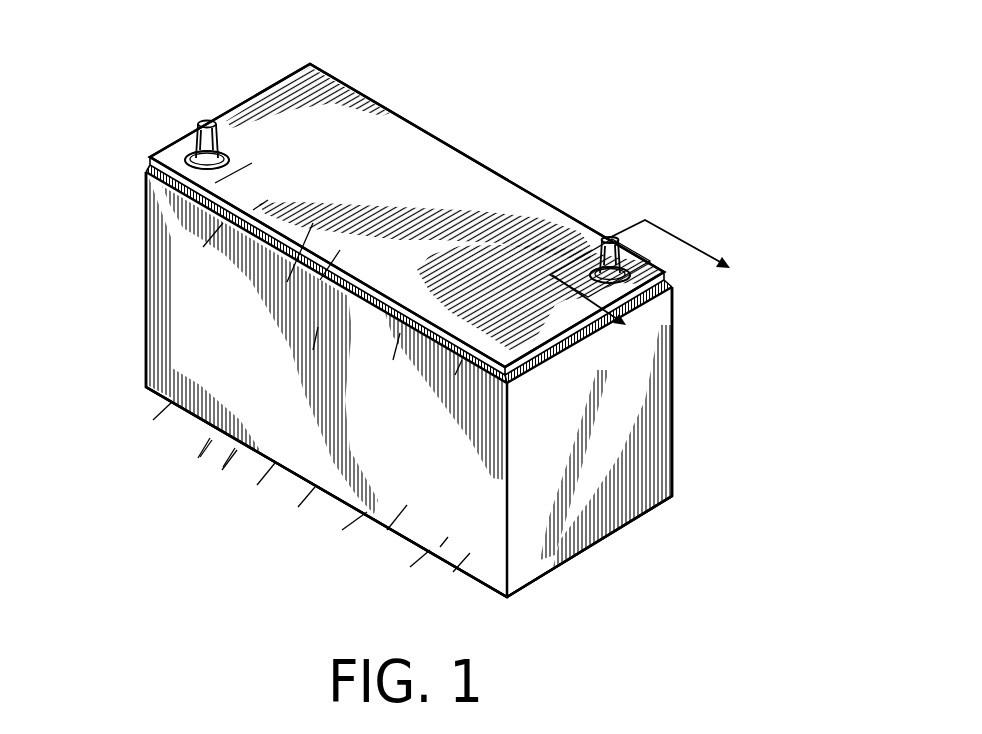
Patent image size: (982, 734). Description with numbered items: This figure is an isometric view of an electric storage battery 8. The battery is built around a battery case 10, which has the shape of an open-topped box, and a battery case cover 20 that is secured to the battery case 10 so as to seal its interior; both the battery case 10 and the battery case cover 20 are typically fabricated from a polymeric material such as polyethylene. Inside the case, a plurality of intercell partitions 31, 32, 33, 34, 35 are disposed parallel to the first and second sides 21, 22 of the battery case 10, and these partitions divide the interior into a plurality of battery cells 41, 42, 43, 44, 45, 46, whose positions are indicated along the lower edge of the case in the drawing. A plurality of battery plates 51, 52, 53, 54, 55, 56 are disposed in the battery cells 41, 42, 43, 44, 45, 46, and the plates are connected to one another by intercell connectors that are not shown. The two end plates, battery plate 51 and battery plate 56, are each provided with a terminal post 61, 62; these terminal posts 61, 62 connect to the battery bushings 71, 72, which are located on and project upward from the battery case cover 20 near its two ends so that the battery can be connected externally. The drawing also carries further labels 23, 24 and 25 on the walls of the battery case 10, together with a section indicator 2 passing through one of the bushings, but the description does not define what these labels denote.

The electric storage battery 8 is at (550, 49).
The battery case 10 is at (672, 328).
The battery case cover 20 is at (457, 168).
The first side 21 is at (656, 448).
The second side 22 is at (145, 187).
The side wall 23 is at (158, 295).
The end wall 24 is at (672, 393).
The bottom wall 25 is at (483, 585).
The section line 2- 2 is at (651, 284).
The intercell partition 31 is at (145, 428).
The intercell partition 32 is at (192, 467).
The intercell partition 33 is at (253, 500).
The intercell partition 34 is at (333, 540).
The intercell partition 35 is at (405, 572).
The battery cell 41 is at (130, 392).
The battery cell 42 is at (177, 437).
The battery cell 43 is at (222, 487).
The battery cell 44 is at (292, 525).
The battery cell 45 is at (370, 555).
The battery cell 46 is at (448, 588).
The battery plate 51 is at (261, 156).
The battery plate 52 is at (287, 192).
The battery plate 53 is at (330, 218).
The battery plate 54 is at (352, 232).
The battery plate 55 is at (398, 300).
The battery plate 56 is at (488, 362).
The terminal post 61 is at (215, 146).
The terminal post 62 is at (573, 258).
The battery bushing 71 is at (203, 123).
The battery bushing 72 is at (607, 237).